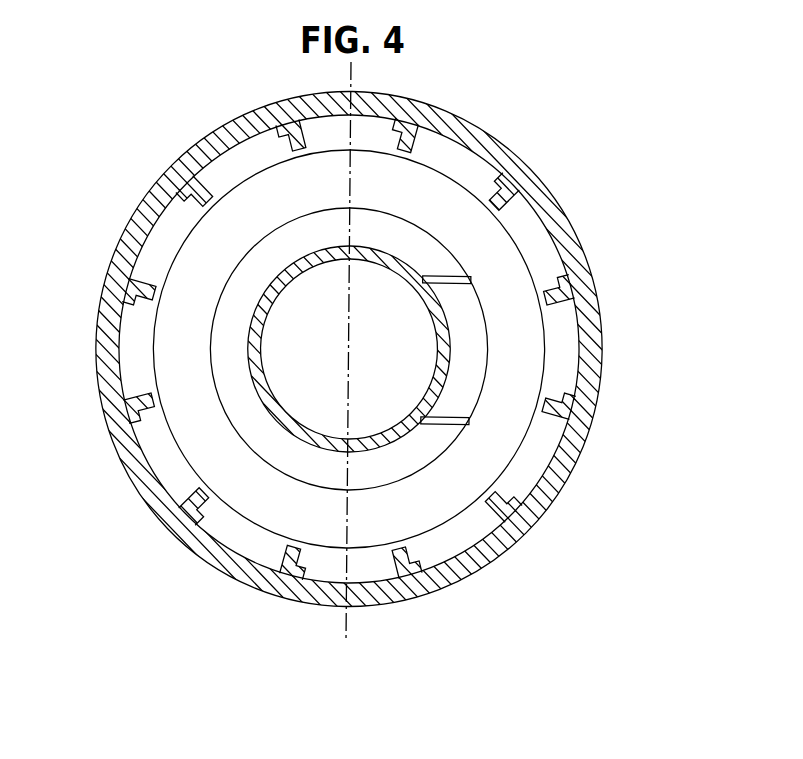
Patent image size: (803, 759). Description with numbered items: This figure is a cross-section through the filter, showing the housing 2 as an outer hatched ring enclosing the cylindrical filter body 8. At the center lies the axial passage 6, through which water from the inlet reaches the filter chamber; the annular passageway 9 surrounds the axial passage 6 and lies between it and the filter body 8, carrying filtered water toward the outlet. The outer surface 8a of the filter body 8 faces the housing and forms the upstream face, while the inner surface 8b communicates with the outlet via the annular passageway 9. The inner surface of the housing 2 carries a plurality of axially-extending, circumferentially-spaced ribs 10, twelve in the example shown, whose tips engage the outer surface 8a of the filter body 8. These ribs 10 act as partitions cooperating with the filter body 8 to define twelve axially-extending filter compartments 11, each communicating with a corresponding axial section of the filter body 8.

The housing 2 is at (537, 187).
The axial passage 6 is at (358, 354).
The cylindrical filter body 8 is at (299, 350).
The outer surface 8a is at (163, 458).
The inner surface 8b is at (265, 420).
The annular passageway 9 is at (397, 447).
The ribs 10 is at (137, 290).
The filter compartments 11 is at (565, 336).